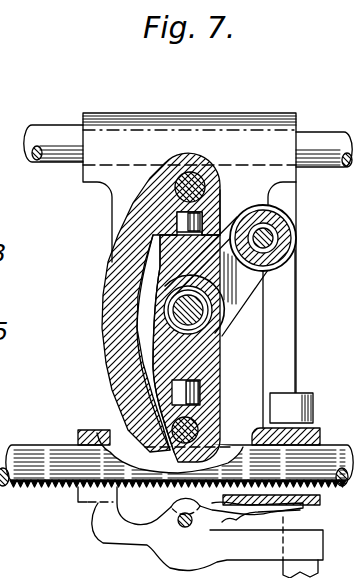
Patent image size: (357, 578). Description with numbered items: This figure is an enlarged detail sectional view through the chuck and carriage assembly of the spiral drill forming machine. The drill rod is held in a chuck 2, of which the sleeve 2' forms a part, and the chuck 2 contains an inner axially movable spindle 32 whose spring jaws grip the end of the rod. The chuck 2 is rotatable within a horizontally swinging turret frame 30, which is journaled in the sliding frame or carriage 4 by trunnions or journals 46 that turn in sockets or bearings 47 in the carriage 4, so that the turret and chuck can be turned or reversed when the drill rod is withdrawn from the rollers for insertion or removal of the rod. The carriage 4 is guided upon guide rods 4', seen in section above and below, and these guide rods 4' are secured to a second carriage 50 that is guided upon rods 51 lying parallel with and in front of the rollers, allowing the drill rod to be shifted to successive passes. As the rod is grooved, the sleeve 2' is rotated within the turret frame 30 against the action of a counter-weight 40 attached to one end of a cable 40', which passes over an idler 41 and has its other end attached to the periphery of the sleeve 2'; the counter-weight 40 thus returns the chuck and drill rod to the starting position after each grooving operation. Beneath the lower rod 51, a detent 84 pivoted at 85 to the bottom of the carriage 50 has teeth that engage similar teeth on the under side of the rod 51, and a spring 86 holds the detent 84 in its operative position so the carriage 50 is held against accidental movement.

The second carriage 50 is at (190, 125).
The guide rods 51 is at (53, 155).
The carriage 4 is at (142, 302).
The guide rods 4' is at (218, 294).
The sockets or bearings 47 is at (213, 210).
The trunnions or journals 46 is at (182, 220).
The turret frame 30 is at (160, 262).
The spindle 32 is at (176, 312).
The chuck 2 is at (204, 348).
The sleeve 2' is at (140, 327).
The idler 41 is at (288, 233).
The cable 40' is at (306, 339).
The counter-weight 40 is at (304, 419).
The detent 84 is at (100, 505).
The pivot 85 is at (180, 523).
The spring 86 is at (263, 517).